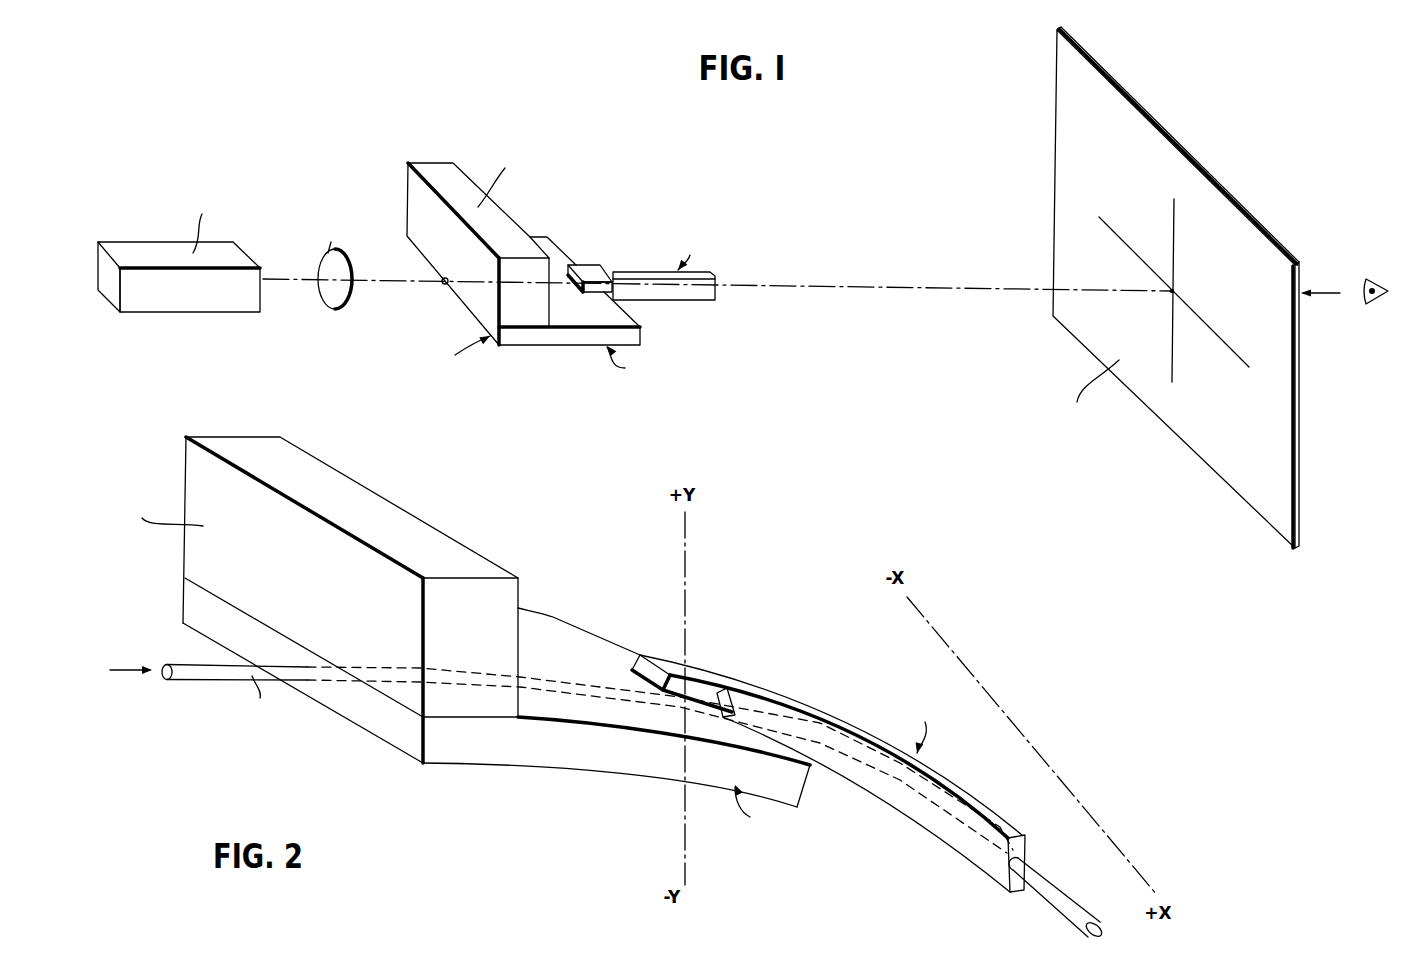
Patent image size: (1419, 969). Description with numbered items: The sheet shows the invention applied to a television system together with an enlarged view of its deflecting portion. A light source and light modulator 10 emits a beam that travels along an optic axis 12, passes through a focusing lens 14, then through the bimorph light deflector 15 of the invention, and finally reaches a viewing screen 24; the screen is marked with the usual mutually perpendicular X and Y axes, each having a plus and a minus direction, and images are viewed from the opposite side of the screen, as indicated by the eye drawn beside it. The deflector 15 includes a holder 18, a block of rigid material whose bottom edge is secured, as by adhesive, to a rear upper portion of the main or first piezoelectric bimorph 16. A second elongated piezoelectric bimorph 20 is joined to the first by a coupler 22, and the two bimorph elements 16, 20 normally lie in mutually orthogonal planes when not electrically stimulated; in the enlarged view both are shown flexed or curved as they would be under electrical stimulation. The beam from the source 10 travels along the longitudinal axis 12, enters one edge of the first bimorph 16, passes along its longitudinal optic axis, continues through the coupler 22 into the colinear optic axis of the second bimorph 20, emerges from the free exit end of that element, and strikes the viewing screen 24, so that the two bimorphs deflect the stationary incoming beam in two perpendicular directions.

In FIG. 1, the light source and light modulator 10 is at (165, 300).
In FIG. 1, the optic axis 12 is at (283, 283).
In FIG. 2, the optic axis 12 is at (127, 676).
In FIG. 1, the focusing lens 14 is at (338, 293).
In FIG. 1, the bimorph light deflector 15 is at (569, 263).
In FIG. 1, the first piezoelectric bimorph 16 is at (557, 344).
In FIG. 2, the first piezoelectric bimorph 16 is at (613, 773).
In FIG. 1, the holder 18 is at (487, 295).
In FIG. 2, the holder 18 is at (403, 523).
In FIG. 1, the second piezoelectric bimorph 20 is at (677, 299).
In FIG. 2, the second piezoelectric bimorph 20 is at (930, 813).
In FIG. 1, the coupler 22 is at (585, 267).
In FIG. 2, the coupler 22 is at (693, 674).
In FIG. 1, the viewing screen 24 is at (1228, 294).